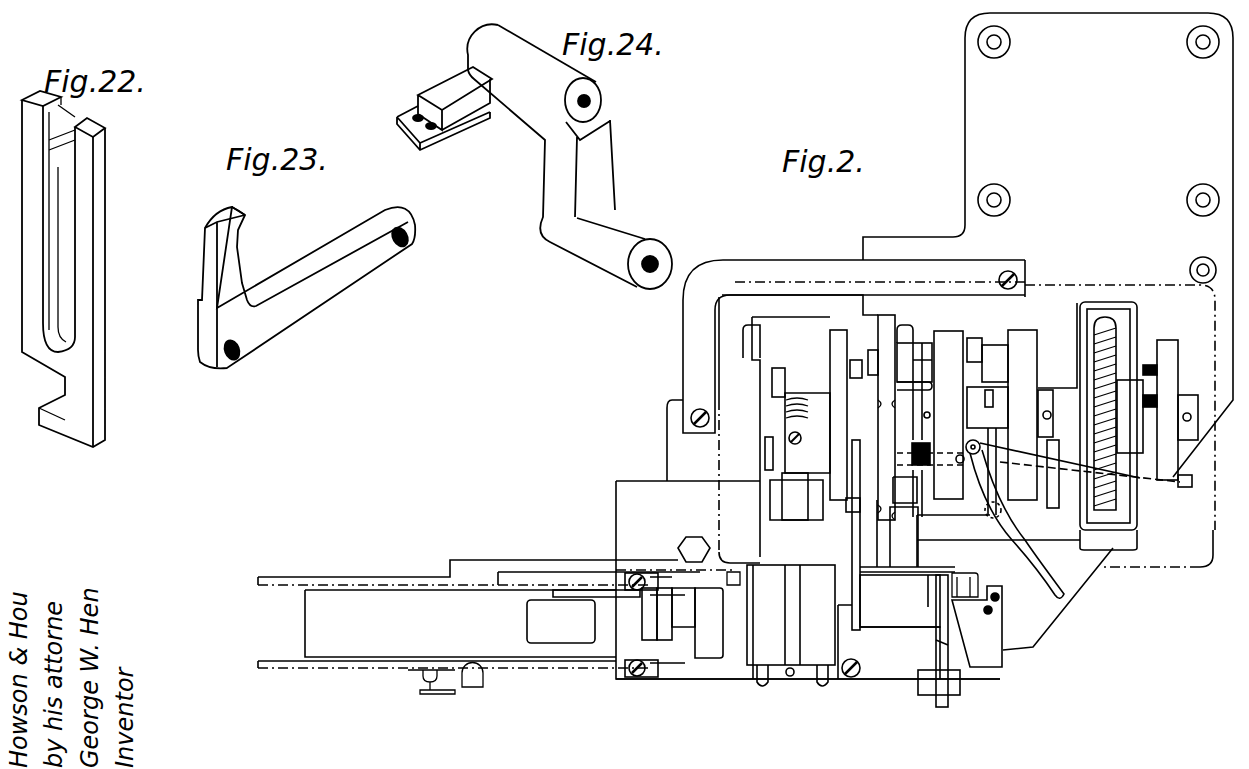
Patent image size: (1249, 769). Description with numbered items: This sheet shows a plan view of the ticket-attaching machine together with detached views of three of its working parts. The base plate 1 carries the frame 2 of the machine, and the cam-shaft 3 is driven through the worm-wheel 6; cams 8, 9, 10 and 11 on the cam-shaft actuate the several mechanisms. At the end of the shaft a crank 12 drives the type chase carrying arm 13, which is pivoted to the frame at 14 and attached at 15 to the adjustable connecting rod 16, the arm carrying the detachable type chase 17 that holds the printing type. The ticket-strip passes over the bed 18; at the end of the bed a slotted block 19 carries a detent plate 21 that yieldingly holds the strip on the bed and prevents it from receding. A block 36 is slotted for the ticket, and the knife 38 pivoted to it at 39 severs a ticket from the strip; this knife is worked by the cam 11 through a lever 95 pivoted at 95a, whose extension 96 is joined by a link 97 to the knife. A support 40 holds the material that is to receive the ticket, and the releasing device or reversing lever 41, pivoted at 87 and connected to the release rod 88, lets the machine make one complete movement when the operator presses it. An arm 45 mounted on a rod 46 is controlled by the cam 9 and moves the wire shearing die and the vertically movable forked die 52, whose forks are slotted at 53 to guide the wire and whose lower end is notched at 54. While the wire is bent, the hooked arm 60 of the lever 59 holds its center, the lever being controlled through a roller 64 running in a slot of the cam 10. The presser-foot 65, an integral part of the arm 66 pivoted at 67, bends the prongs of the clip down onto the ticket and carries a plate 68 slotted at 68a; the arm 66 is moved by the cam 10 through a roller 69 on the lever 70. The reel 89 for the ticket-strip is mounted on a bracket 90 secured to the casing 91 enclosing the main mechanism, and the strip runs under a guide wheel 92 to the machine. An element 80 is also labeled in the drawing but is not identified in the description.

In FIG. 2, the base plate 1 is at (924, 346).
In FIG. 2, the frame 2 is at (968, 426).
In FIG. 2, the cam-shaft 3 is at (987, 407).
In FIG. 2, the worm-wheel 6 is at (1125, 330).
In FIG. 2, the cam 8 is at (1173, 358).
In FIG. 2, the cam 9 is at (1023, 343).
In FIG. 2, the cam 10 is at (938, 337).
In FIG. 2, the cam 11 is at (836, 343).
In FIG. 2, the crank 12 is at (818, 395).
In FIG. 2, the type chase carrying arm 13 is at (791, 615).
In FIG. 2, the pivot 14 is at (750, 347).
In FIG. 2, the attachment point 15 is at (765, 503).
In FIG. 2, the adjustable connecting rod 16 is at (800, 465).
In FIG. 2, the type chase 17 is at (783, 684).
In FIG. 2, the bed 18 is at (727, 672).
In FIG. 2, the block 19 is at (642, 620).
In FIG. 2, the detent plate 21 is at (690, 600).
In FIG. 2, the block 36 is at (889, 642).
In FIG. 2, the knife 38 is at (947, 646).
In FIG. 2, the pivot 39 is at (938, 698).
In FIG. 2, the support 40 is at (977, 626).
In FIG. 2, the releasing device 41 is at (1083, 586).
In FIG. 2, the arm 45 is at (998, 490).
In FIG. 2, the rod 46 is at (1067, 541).
In FIG. 22, the forked die 52 is at (77, 269).
In FIG. 22, the slots 53 is at (50, 105).
In FIG. 22, the notch 54 is at (50, 408).
In FIG. 23, the lever 59 is at (306, 287).
In FIG. 23, the hooked arm 60 is at (248, 221).
In FIG. 2, the roller 64 is at (933, 447).
In FIG. 24, the presser-foot 65 is at (460, 80).
In FIG. 2, the presser-foot 65 is at (1052, 594).
In FIG. 24, the arm 66 is at (556, 155).
In FIG. 24, the pivot 67 is at (640, 290).
In FIG. 24, the plate 68 is at (413, 110).
In FIG. 24, the slot 68a is at (428, 126).
In FIG. 2, the roller 69 is at (972, 334).
In FIG. 2, the lever 70 is at (984, 345).
In FIG. 2, the post 80 is at (1059, 507).
In FIG. 2, the pivot 87 is at (988, 518).
In FIG. 2, the release rod 88 is at (1183, 488).
In FIG. 2, the reel 89 is at (454, 642).
In FIG. 2, the bracket 90 is at (479, 562).
In FIG. 2, the casing 91 is at (714, 449).
In FIG. 2, the guide wheel 92 is at (583, 616).
In FIG. 2, the lever 95 is at (856, 442).
In FIG. 2, the pivot 95a is at (846, 505).
In FIG. 2, the extension 96 is at (900, 601).
In FIG. 2, the link 97 is at (928, 606).